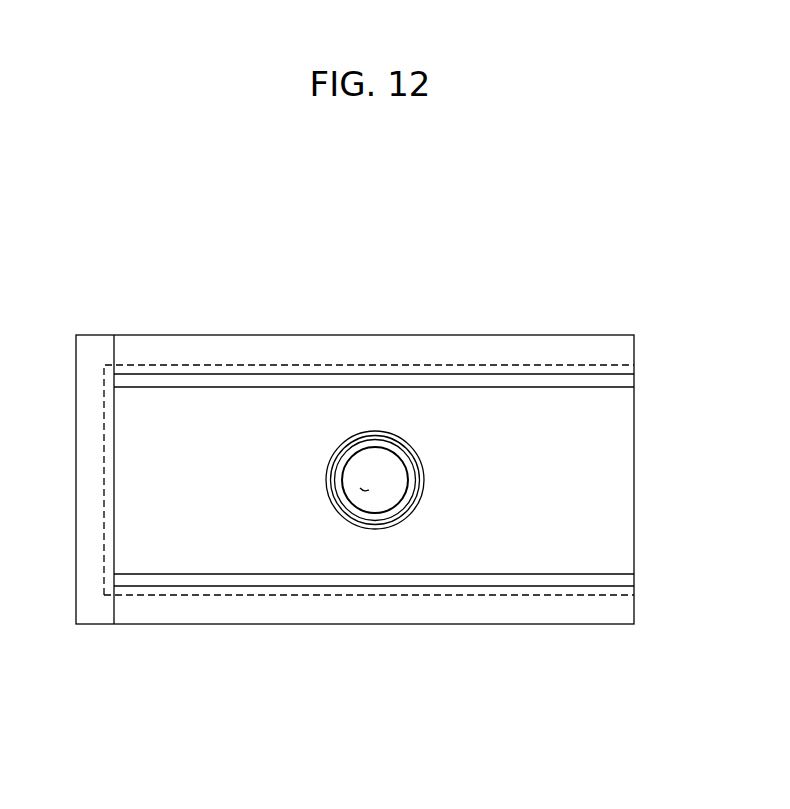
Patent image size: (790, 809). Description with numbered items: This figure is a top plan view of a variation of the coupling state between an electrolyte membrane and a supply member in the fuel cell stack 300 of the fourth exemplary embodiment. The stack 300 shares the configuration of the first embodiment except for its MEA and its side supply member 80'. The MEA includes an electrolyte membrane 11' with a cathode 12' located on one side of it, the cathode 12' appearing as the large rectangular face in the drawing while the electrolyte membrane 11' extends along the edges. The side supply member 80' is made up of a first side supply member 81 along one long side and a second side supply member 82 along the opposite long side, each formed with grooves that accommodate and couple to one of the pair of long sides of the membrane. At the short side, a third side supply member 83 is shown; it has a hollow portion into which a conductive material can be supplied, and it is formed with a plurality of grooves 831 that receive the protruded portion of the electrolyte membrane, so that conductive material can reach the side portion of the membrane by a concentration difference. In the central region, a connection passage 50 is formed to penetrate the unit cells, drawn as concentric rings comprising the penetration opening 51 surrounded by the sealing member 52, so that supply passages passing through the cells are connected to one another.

The fuel cell stack 300 is at (391, 231).
The side supply member 80' is at (355, 429).
The third side supply member 83 is at (93, 347).
The grooves 831 is at (114, 544).
The first side supply member 81 is at (623, 352).
The second side supply member 82 is at (622, 607).
The cathode 12' is at (655, 483).
The electrolyte membrane 11' is at (660, 565).
The connection passage 50 is at (375, 431).
The penetration opening 51 is at (402, 510).
The sealing member 52 is at (360, 488).